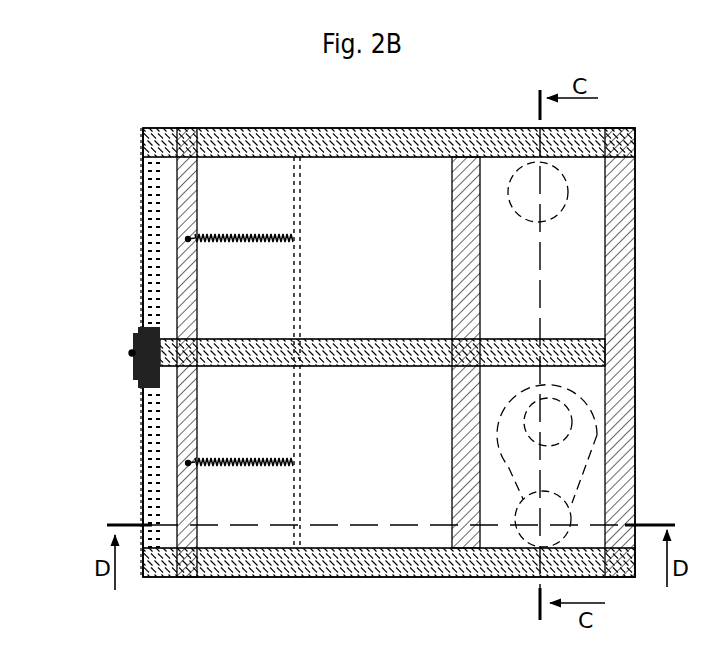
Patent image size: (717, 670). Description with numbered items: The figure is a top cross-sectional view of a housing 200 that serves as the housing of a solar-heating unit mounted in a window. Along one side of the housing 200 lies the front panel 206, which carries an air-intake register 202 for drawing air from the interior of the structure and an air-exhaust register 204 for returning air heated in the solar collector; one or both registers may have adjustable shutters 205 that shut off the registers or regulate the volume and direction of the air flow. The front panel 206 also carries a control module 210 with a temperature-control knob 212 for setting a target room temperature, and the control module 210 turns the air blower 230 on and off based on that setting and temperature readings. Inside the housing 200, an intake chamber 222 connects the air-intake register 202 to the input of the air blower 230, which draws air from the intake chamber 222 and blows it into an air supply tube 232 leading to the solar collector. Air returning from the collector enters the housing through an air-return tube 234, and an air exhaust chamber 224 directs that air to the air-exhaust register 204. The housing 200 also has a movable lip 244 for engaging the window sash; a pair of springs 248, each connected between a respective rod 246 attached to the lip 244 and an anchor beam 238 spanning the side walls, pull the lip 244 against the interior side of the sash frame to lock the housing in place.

The housing 200 is at (376, 88).
The air-intake register 202 is at (143, 463).
The air-exhaust register 204 is at (143, 203).
The adjustable shutters 205 is at (145, 248).
The front panel 206 is at (123, 293).
The control module 210 is at (135, 327).
The temperature-control knob 212 is at (125, 357).
The intake chamber 222 is at (352, 512).
The air exhaust chamber 224 is at (397, 178).
The air blower 230 is at (590, 402).
The air supply tube 232 is at (518, 515).
The air-return tube 234 is at (546, 222).
The anchor beam 238 is at (302, 326).
The movable lip 244 is at (187, 578).
The rod 246 is at (195, 233).
The springs 248 is at (240, 245).